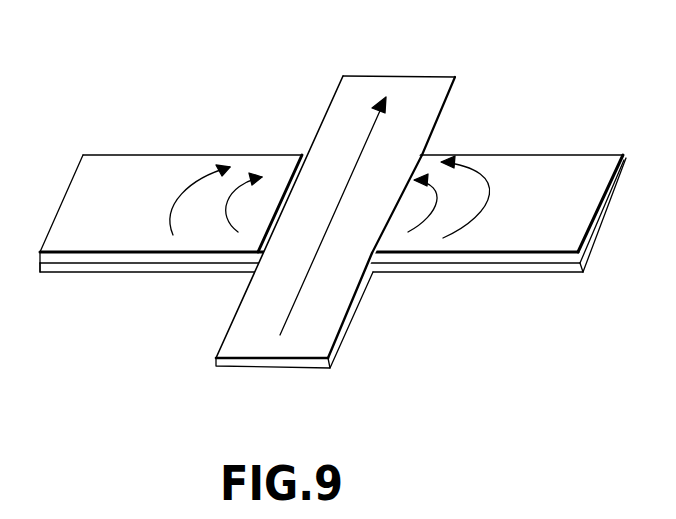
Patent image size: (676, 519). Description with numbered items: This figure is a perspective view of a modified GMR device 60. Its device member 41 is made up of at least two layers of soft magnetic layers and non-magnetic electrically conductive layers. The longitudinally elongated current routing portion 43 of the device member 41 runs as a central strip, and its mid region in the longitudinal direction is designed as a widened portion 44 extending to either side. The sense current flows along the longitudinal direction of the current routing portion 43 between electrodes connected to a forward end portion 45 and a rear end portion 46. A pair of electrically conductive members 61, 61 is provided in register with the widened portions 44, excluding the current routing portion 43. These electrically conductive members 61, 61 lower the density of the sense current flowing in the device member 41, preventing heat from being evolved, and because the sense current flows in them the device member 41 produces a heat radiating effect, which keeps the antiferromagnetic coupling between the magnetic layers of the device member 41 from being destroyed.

The GMR device 60 is at (333, 190).
The device member 41 is at (376, 190).
The current routing portion 43 is at (383, 173).
The forward end portion 45 is at (433, 90).
The rear end portion 46 is at (318, 327).
The electrically conductive member 61 is at (103, 172).
The widened portion 44 is at (168, 275).